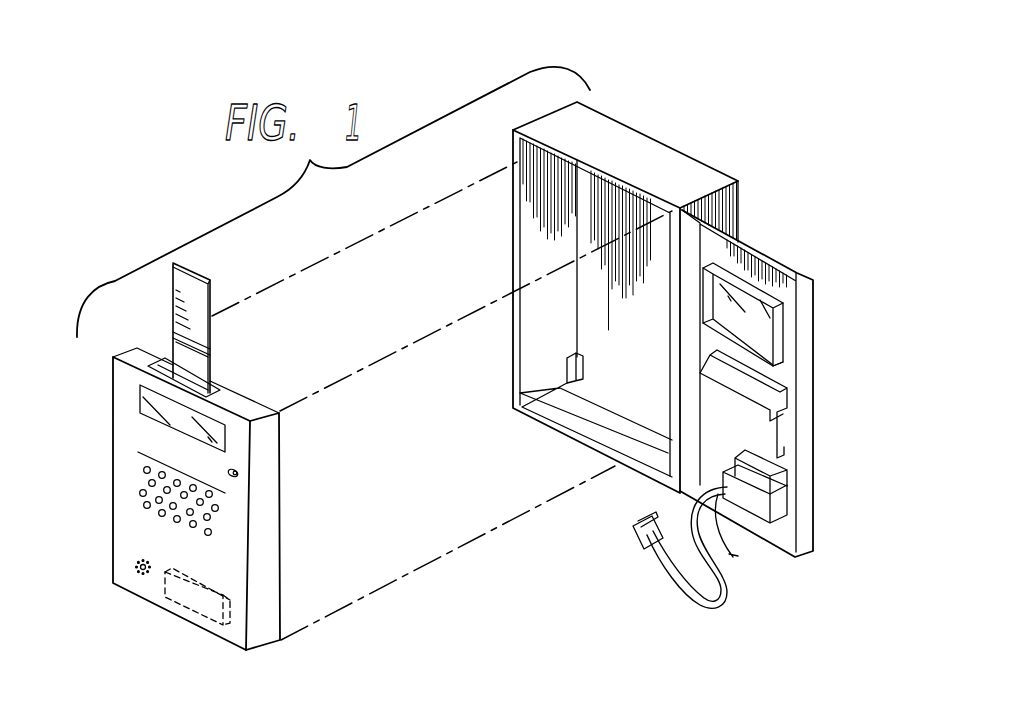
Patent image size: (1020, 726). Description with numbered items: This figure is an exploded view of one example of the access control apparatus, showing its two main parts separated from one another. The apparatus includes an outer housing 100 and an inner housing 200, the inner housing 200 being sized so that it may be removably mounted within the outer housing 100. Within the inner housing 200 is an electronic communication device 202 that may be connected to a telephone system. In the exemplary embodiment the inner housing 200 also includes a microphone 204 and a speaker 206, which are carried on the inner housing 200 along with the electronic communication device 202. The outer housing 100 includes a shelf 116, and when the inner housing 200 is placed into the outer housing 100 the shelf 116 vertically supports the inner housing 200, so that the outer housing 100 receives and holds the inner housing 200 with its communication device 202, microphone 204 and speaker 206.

The outer housing 100 is at (613, 96).
The shelf 116 is at (194, 272).
The inner housing 200 is at (294, 348).
The electronic communication device 202 is at (207, 615).
The microphone 204 is at (238, 470).
The speaker 206 is at (133, 569).